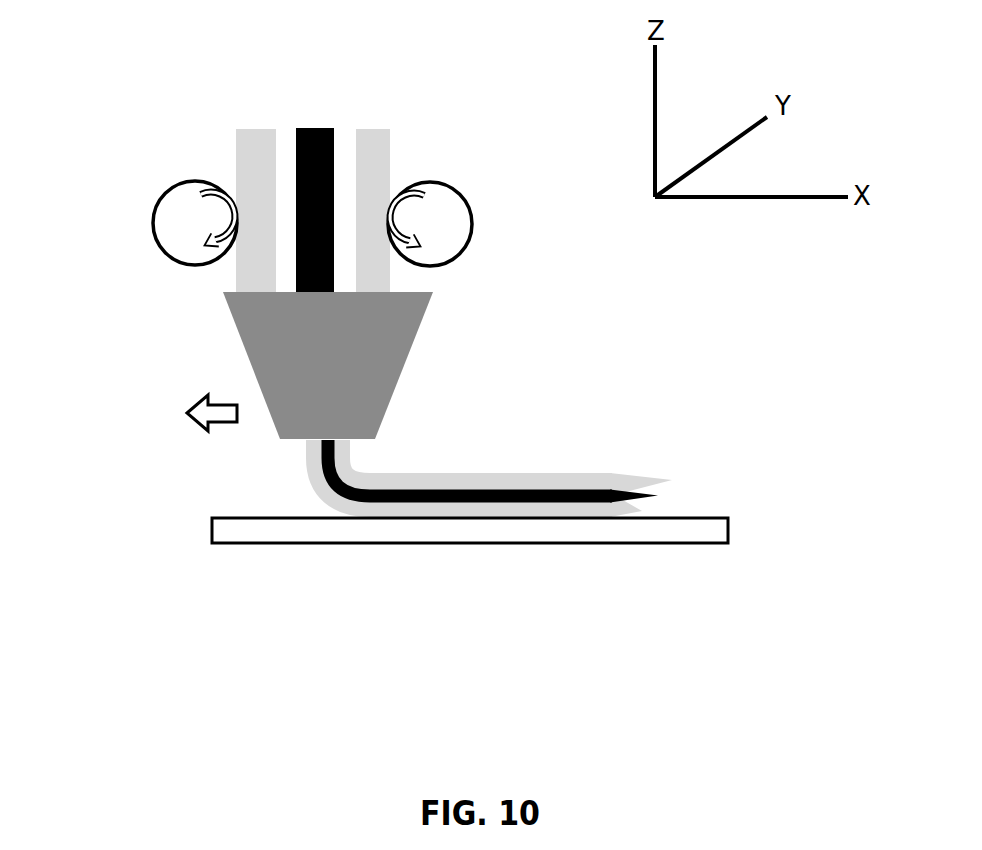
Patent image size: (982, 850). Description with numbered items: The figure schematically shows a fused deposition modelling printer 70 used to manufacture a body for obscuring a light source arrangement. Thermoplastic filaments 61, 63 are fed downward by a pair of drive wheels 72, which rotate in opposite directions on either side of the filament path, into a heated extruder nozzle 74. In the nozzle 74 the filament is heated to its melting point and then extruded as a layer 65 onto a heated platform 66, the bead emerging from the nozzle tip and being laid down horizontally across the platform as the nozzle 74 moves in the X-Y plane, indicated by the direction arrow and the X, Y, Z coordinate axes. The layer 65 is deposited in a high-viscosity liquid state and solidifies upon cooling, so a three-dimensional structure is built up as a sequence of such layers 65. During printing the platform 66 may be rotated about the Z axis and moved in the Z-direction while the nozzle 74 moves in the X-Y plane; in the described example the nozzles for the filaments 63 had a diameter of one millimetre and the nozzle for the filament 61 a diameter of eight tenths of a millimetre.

The thermoplastic filament 61 is at (320, 128).
The thermoplastic filaments 63 is at (263, 147).
The drive wheels 72 is at (177, 222).
The extruder nozzle 74 is at (273, 375).
The layer 65 is at (522, 507).
The heated platform 66 is at (360, 530).
The printer 70 is at (498, 757).